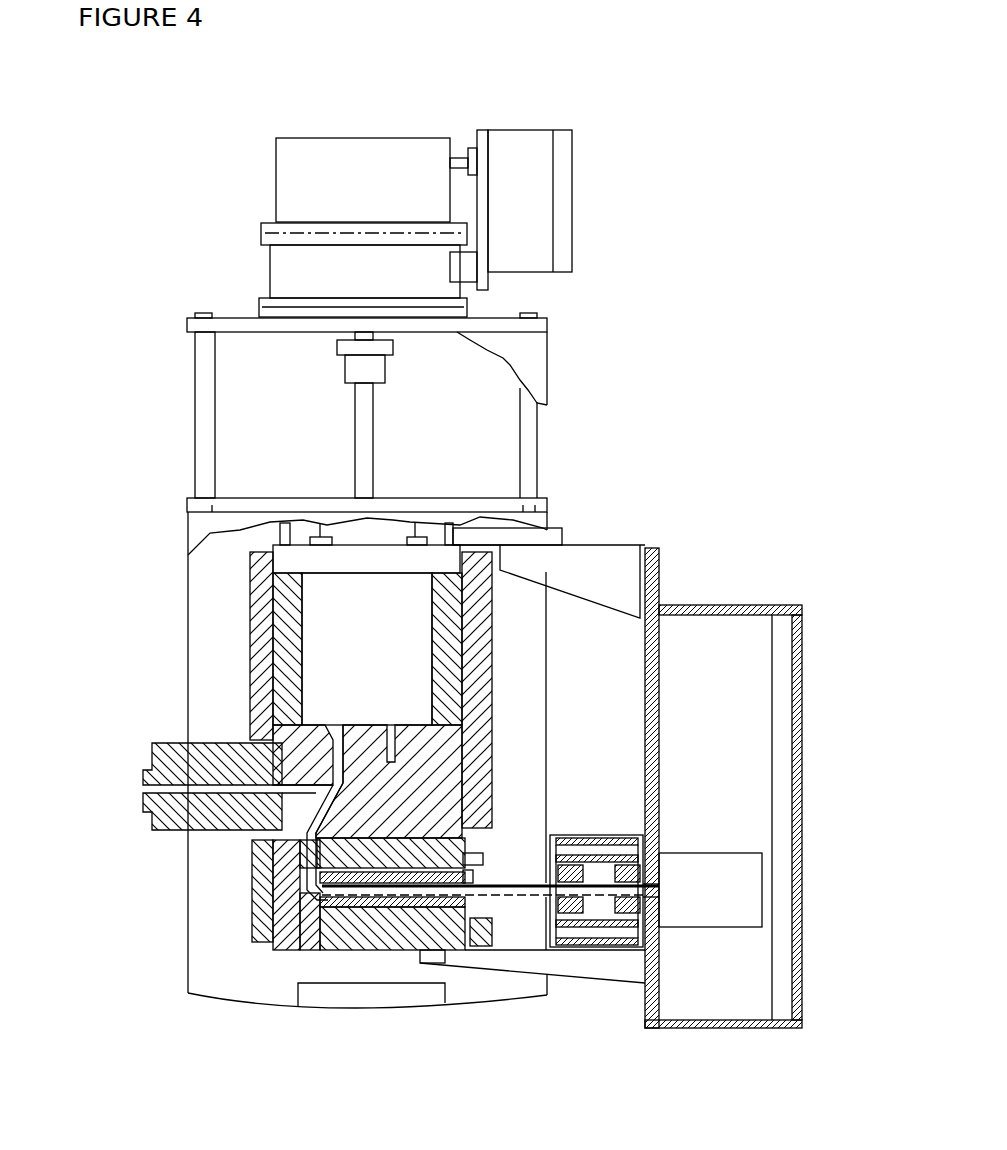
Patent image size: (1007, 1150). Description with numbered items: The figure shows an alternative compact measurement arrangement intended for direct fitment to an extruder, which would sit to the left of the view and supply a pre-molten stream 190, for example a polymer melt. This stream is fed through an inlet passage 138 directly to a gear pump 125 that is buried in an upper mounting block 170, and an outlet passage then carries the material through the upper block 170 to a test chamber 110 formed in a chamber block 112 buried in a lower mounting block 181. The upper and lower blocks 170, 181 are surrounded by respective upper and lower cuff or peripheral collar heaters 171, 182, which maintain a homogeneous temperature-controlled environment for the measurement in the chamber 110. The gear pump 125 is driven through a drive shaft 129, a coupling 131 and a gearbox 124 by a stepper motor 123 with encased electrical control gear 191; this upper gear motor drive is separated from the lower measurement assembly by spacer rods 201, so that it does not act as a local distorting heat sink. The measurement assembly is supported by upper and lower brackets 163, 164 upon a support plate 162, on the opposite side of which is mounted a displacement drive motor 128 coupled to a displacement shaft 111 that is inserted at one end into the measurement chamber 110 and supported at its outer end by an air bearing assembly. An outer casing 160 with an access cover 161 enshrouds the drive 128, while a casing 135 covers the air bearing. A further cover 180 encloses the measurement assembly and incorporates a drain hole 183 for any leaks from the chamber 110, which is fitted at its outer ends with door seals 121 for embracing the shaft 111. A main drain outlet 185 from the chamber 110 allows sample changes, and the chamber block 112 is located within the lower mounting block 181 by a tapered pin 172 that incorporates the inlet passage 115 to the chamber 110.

The stepper motor 123 is at (320, 163).
The gearbox 124 is at (300, 273).
The encased electrical control gear 191 is at (543, 212).
The coupling 131 is at (362, 367).
The drive shaft 129 is at (367, 415).
The spacer rods 201 is at (530, 435).
The upper bracket 163 is at (577, 557).
The support plate 162 is at (650, 578).
The access cover 161 is at (797, 650).
The outer casing 160 is at (712, 1027).
The displacement drive motor 128 is at (745, 872).
The casing 135 is at (617, 838).
The upper cuff heater 171 is at (263, 587).
The gear pump 125 is at (333, 627).
The upper mounting block 170 is at (290, 652).
The inlet passage 138 is at (333, 748).
The pre-molten stream 190 is at (136, 789).
The inlet passage 115 is at (312, 855).
The cover 180 is at (207, 888).
The lower cuff heater 182 is at (263, 907).
The lower mounting block 181 is at (288, 923).
The tapered pin 172 is at (312, 927).
The chamber block 112 is at (340, 923).
The test chamber 110 is at (385, 900).
The displacement shaft 111 is at (502, 884).
The main drain outlet 185 is at (437, 958).
The door seals 121 is at (473, 948).
The drain hole 183 is at (527, 988).
The lower bracket 164 is at (623, 973).